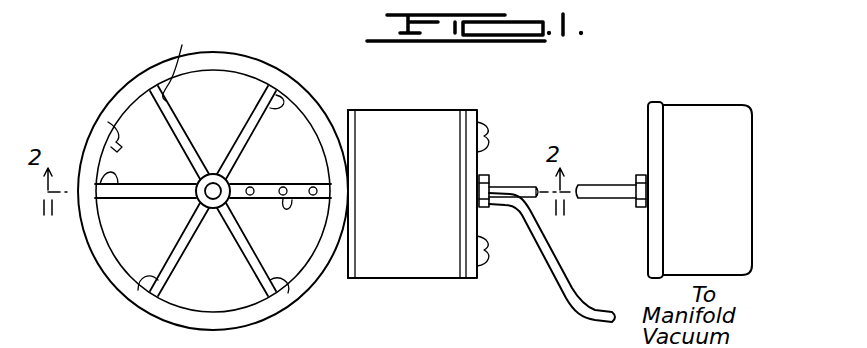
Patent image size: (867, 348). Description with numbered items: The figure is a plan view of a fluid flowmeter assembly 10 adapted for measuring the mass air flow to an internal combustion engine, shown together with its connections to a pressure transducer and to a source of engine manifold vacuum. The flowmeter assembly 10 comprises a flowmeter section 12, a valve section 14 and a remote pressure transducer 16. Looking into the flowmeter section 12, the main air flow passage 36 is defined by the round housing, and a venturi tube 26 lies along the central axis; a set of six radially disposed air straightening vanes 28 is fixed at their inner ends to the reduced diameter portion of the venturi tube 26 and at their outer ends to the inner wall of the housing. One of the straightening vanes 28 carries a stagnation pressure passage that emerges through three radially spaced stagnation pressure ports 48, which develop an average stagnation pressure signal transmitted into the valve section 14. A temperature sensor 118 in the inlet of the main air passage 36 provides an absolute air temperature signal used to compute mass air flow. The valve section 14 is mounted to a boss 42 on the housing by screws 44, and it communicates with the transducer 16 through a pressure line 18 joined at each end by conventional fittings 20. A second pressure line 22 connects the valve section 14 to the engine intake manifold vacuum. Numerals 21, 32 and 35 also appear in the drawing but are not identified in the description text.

The fluid flowmeter assembly 10 is at (570, 91).
The flowmeter section 12 is at (135, 82).
The valve section 14 is at (416, 110).
The pressure transducer 16 is at (712, 104).
The pressure line 18 is at (575, 312).
The fittings 20 is at (485, 178).
The base 21 is at (359, 338).
The second pressure line 22 is at (605, 170).
The venturi tube 26 is at (203, 199).
The air straightening vanes 28 is at (315, 296).
The openings 32 is at (167, 164).
The rim 35 is at (185, 321).
The main air flow passage 36 is at (118, 210).
The boss 42 is at (335, 110).
The screws 44 is at (483, 125).
The stagnation pressure ports 48 is at (313, 186).
The temperature sensor 118 is at (112, 125).